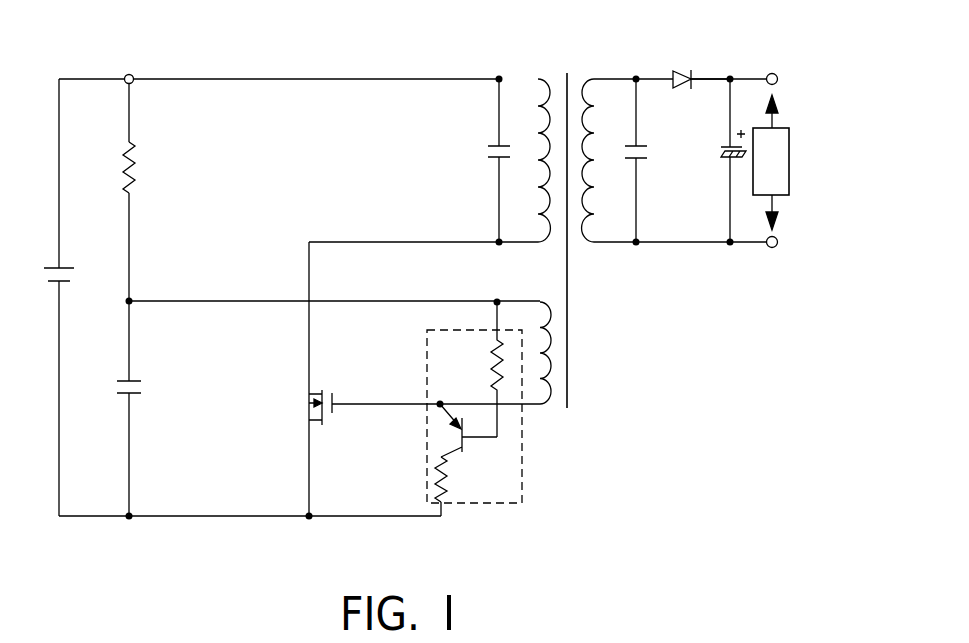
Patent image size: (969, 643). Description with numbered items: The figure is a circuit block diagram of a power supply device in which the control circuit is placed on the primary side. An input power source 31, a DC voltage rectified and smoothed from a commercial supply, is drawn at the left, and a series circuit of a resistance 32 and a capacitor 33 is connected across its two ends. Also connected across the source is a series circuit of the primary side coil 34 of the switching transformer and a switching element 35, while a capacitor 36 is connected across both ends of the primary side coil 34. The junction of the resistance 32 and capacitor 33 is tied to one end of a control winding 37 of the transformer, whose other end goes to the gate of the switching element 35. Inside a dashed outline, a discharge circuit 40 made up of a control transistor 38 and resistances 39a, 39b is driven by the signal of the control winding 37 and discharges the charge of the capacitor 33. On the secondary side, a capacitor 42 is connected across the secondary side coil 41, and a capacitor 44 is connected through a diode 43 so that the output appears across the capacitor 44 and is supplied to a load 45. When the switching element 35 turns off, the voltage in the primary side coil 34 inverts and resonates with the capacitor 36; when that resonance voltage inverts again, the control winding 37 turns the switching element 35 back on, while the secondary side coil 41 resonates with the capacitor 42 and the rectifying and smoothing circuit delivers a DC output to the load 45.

The input power source 31 is at (67, 282).
The resistance 32 is at (134, 179).
The capacitor 33 is at (141, 393).
The primary side coil of switching transformer 34 is at (538, 79).
The switching element 35 is at (306, 408).
The capacitor 36 is at (488, 152).
The control winding of switching transformer 37 is at (547, 407).
The control transistor 38 is at (465, 448).
The resistance 39a is at (490, 359).
The resistance 39b is at (436, 473).
The discharge circuit 40 is at (525, 472).
The secondary side coil of switching transformer 41 is at (594, 79).
The capacitor 42 is at (647, 158).
The diode 43 is at (683, 71).
The capacitor 44 is at (722, 153).
The load 45 is at (790, 160).